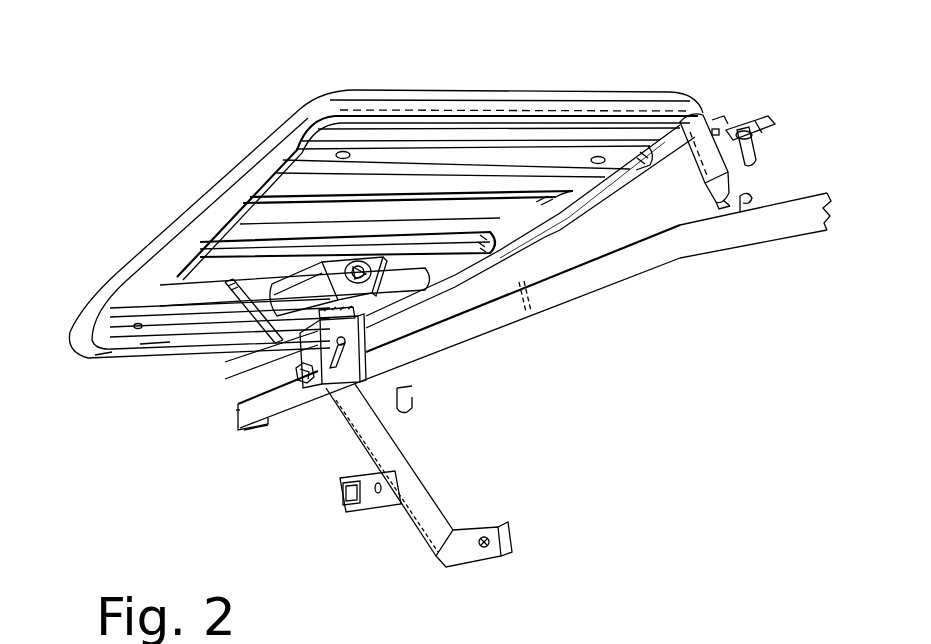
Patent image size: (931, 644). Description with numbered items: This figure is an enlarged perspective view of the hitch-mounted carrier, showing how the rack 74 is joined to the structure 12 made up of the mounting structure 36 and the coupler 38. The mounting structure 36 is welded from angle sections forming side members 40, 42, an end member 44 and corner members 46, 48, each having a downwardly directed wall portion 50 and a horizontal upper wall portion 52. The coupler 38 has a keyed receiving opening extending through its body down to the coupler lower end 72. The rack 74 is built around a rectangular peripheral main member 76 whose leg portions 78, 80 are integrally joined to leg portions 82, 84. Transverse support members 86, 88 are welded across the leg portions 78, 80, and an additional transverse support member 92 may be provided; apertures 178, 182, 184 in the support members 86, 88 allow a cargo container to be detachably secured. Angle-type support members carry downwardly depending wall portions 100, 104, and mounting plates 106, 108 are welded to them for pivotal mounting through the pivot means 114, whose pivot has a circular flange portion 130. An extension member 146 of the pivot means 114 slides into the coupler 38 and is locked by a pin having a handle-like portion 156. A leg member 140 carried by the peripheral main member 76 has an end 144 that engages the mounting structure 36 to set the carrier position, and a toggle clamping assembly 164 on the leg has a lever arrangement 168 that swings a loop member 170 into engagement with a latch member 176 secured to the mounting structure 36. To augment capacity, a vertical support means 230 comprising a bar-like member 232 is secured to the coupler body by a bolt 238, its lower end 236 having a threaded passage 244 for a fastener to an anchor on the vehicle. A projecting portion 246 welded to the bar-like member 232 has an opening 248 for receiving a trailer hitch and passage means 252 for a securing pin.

The structure 12 is at (232, 503).
The mounting structure 36 is at (640, 273).
The coupler 38 is at (291, 355).
The side member 40 is at (283, 437).
The side member 42 is at (818, 224).
The end member 44 is at (527, 313).
The corner member 46 is at (253, 437).
The corner member 48 is at (562, 300).
The downwardly directed wall portion 50 is at (553, 277).
The upper wall portion 52 is at (413, 392).
The coupler lower end 72 is at (350, 398).
The rack 74 is at (220, 166).
The peripheral main member 76 is at (288, 120).
The leg portion 78 is at (217, 193).
The leg portion 80 is at (570, 200).
The leg portion 82 is at (108, 358).
The leg portion 84 is at (503, 97).
The transverse support member 86 is at (160, 330).
The transverse support member 88 is at (533, 157).
The additional transverse support member 92 is at (276, 203).
The wall portion 100 is at (170, 293).
The wall portion 104 is at (453, 240).
The mounting plate 106 is at (247, 290).
The mounting plate 108 is at (345, 262).
The pivot means 114 is at (257, 348).
The circular flange portion 130 is at (470, 318).
The leg member 140 is at (697, 168).
The leg end 144 is at (719, 205).
The extension member 146 is at (380, 323).
The handle-like portion 156 is at (296, 376).
The toggle clamping assembly 164 is at (727, 113).
The lever arrangement 168 is at (767, 133).
The loop member 170 is at (753, 163).
The latch member 176 is at (733, 200).
The aperture 178 is at (135, 325).
The aperture 182 is at (348, 152).
The aperture 184 is at (601, 157).
The vertical support means 230 is at (432, 543).
The bar-like member 232 is at (430, 517).
The lower end 236 is at (475, 527).
The bolt 238 is at (240, 423).
The threaded passage 244 is at (480, 545).
The projecting portion 246 is at (352, 507).
The opening 248 is at (352, 510).
The passage means 252 is at (381, 487).